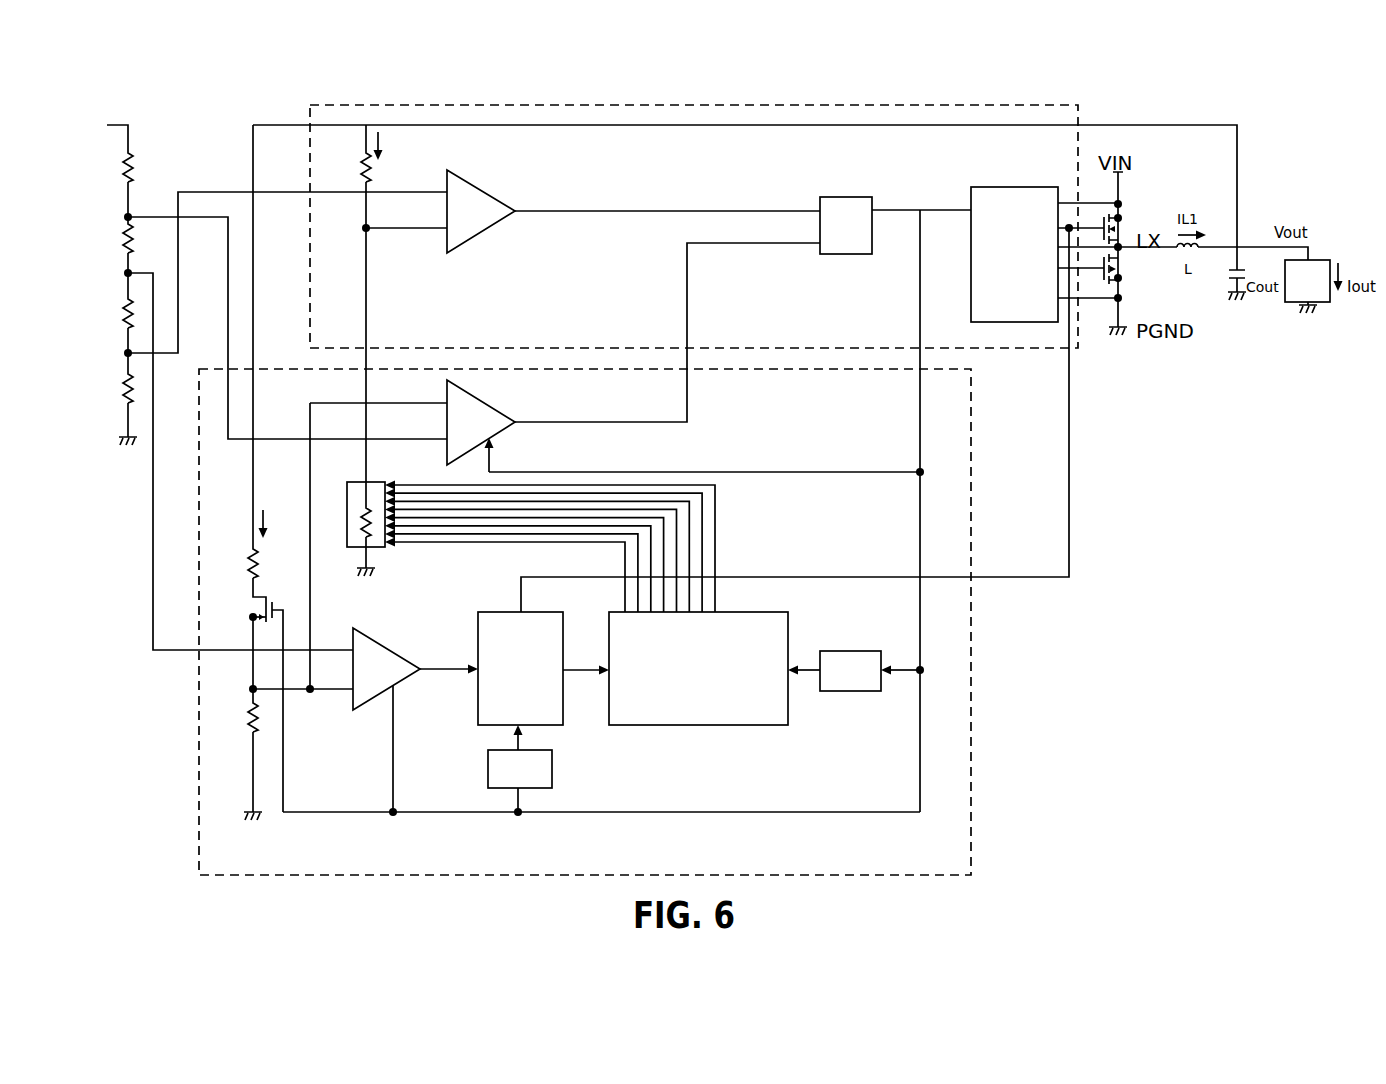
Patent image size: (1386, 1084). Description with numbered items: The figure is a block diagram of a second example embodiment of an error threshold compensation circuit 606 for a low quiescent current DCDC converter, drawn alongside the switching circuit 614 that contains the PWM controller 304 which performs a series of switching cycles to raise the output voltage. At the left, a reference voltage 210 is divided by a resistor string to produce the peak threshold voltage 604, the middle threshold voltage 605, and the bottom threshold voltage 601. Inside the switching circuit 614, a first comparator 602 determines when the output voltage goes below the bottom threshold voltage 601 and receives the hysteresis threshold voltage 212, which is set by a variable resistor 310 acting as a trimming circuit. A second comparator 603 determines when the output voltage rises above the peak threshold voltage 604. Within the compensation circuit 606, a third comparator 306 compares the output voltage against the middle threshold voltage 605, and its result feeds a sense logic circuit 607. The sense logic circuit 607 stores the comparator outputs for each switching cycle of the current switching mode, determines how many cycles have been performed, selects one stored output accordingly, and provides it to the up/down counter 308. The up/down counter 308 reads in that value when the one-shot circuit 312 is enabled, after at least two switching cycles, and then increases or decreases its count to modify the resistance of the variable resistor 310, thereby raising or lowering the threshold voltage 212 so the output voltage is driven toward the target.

The reference voltage 210 is at (97, 161).
The peak threshold voltage 604 is at (264, 323).
The middle threshold voltage 605 is at (217, 456).
The bottom threshold voltage 601 is at (264, 277).
The switching circuit 614 is at (694, 215).
The threshold voltage 212 is at (404, 238).
The first comparator 602 is at (633, 211).
The second comparator 603 is at (412, 426).
The PWM controller 304 is at (1000, 286).
The variable resistor 310 is at (336, 507).
The third comparator 306 is at (415, 669).
The sense logic circuit 607 is at (506, 707).
The up/down counter 308 is at (685, 707).
The one-shot circuit 312 is at (836, 681).
The error threshold compensation circuit 606 is at (952, 866).